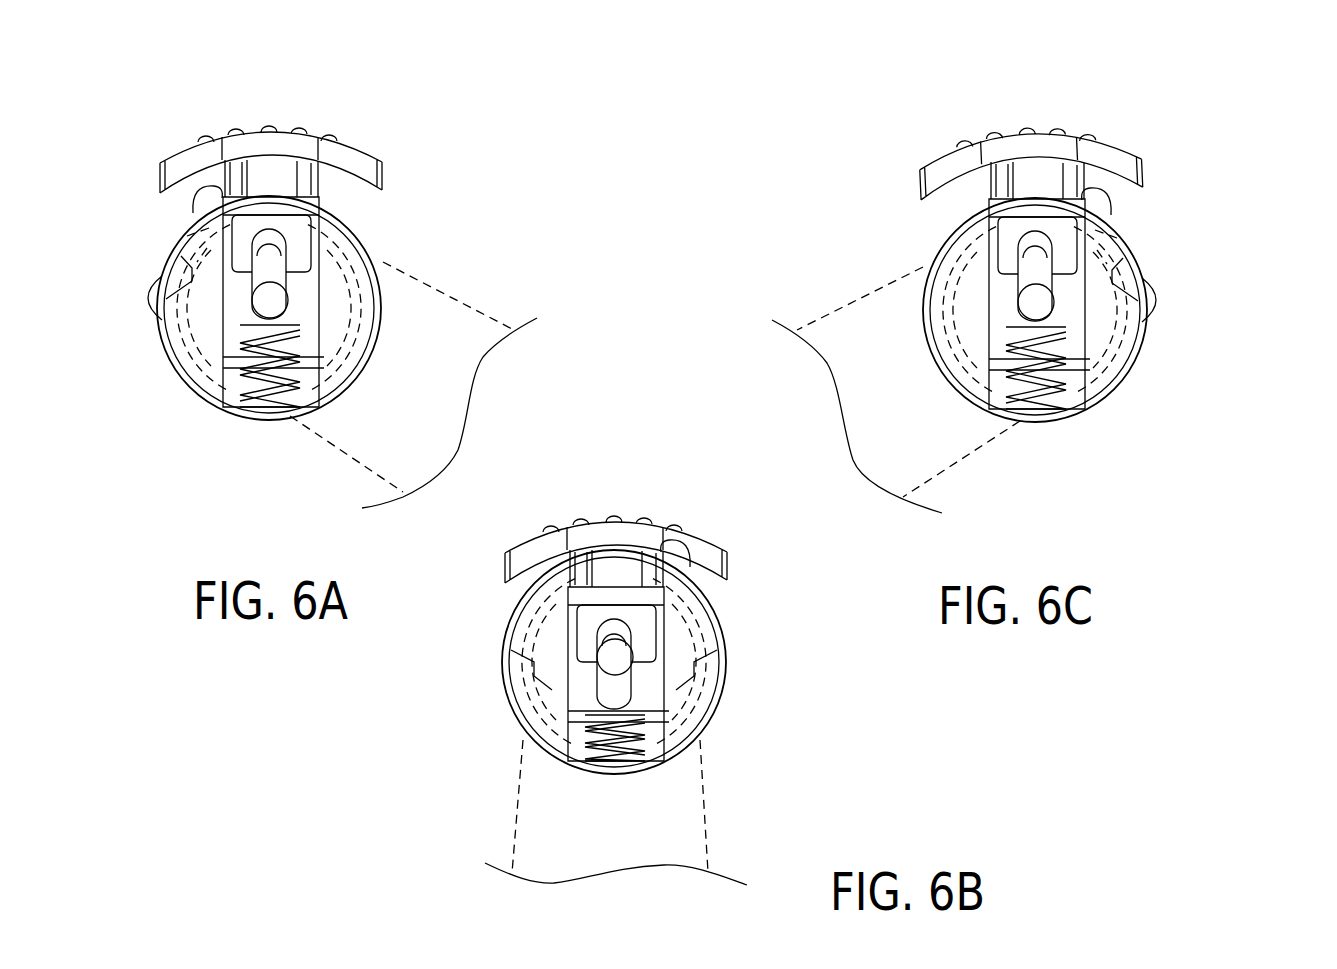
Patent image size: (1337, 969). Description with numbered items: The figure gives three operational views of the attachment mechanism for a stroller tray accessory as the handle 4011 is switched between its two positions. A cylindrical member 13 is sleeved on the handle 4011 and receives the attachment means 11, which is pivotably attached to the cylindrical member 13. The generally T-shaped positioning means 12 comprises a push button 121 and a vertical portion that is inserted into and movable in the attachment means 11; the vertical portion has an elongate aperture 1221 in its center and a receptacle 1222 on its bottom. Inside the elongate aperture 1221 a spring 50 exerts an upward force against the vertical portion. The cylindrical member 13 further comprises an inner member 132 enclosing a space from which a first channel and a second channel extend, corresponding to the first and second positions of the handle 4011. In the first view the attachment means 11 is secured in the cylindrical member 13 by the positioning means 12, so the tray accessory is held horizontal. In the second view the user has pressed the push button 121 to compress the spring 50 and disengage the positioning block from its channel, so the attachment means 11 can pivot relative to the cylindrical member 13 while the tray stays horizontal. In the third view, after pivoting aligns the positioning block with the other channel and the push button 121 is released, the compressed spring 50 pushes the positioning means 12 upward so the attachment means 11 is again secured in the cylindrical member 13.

In FIG. 6A, the attachment means 11 is at (224, 311).
In FIG. 6C, the attachment means 11 is at (1076, 316).
In FIG. 6B, the attachment means 11 is at (653, 666).
In FIG. 6A, the positioning means 12 is at (330, 221).
In FIG. 6C, the positioning means 12 is at (985, 224).
In FIG. 6B, the positioning means 12 is at (577, 591).
In FIG. 6A, the push button 121 is at (263, 115).
In FIG. 6C, the push button 121 is at (1041, 122).
In FIG. 6B, the push button 121 is at (622, 502).
In FIG. 6A, the elongate aperture 1221 is at (187, 224).
In FIG. 6C, the elongate aperture 1221 is at (1119, 230).
In FIG. 6B, the elongate aperture 1221 is at (696, 600).
In FIG. 6A, the receptacle 1222 is at (158, 285).
In FIG. 6C, the receptacle 1222 is at (1148, 287).
In FIG. 6B, the receptacle 1222 is at (725, 664).
In FIG. 6A, the cylindrical member 13 is at (321, 283).
In FIG. 6C, the cylindrical member 13 is at (988, 285).
In FIG. 6B, the cylindrical member 13 is at (557, 643).
In FIG. 6A, the inner member 132 is at (110, 274).
In FIG. 6C, the inner member 132 is at (1195, 276).
In FIG. 6A, the handle 4011 is at (420, 371).
In FIG. 6C, the handle 4011 is at (888, 375).
In FIG. 6B, the handle 4011 is at (577, 812).
In FIG. 6A, the spring 50 is at (240, 428).
In FIG. 6C, the spring 50 is at (1065, 431).
In FIG. 6B, the spring 50 is at (541, 739).